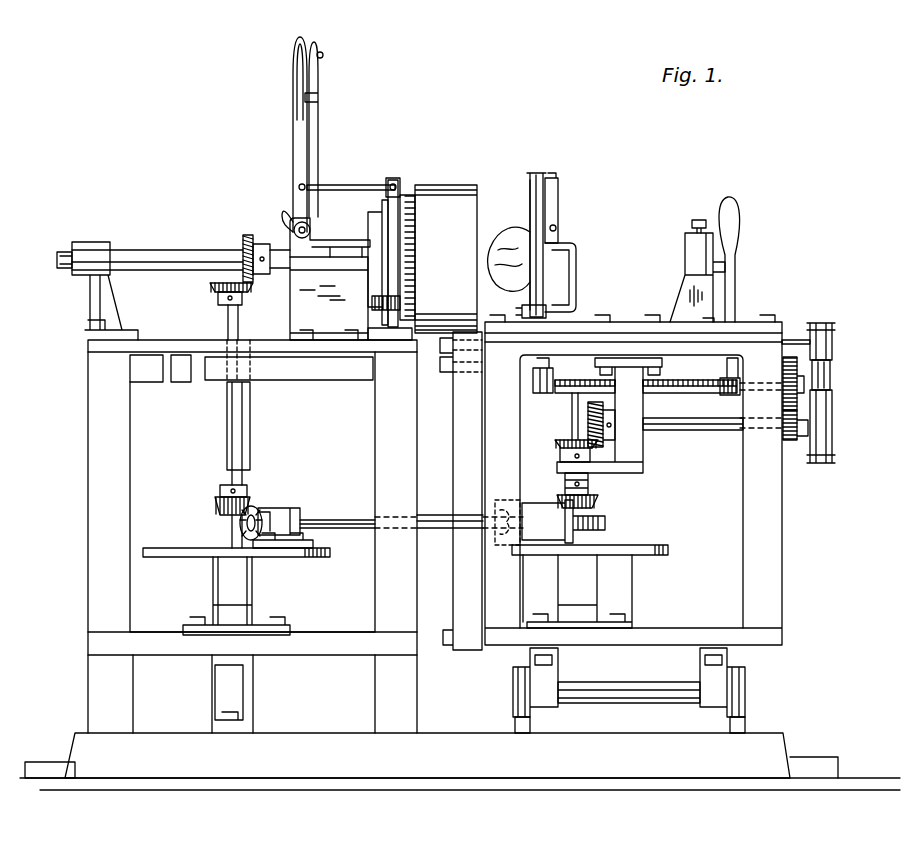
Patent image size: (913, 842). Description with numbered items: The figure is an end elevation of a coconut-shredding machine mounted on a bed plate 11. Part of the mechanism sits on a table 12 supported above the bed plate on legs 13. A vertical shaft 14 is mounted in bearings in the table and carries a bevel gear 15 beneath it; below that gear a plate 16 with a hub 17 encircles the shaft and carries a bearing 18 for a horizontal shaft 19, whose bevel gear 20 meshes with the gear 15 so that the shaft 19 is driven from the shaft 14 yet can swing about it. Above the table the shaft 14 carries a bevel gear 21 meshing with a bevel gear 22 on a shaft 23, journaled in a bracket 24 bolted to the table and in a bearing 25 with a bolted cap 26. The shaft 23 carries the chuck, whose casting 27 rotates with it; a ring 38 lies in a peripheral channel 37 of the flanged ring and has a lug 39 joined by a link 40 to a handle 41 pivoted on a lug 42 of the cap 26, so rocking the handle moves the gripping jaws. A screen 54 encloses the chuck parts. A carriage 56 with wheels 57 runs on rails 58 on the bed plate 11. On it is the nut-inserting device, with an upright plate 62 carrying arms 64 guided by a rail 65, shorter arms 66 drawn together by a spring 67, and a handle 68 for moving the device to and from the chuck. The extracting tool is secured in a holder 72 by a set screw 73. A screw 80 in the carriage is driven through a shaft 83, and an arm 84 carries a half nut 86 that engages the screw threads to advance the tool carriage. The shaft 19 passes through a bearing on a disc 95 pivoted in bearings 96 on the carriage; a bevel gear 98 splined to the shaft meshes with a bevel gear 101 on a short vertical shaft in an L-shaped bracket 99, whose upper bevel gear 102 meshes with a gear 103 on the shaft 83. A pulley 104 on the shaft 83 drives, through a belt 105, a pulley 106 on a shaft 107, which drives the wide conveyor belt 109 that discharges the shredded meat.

The bed plate 11 is at (765, 745).
The table 12 is at (156, 340).
The legs 13 is at (88, 512).
The vertical shaft 14 is at (230, 440).
The bevel gear 15 is at (221, 493).
The plate 16 is at (171, 560).
The hub 17 is at (215, 588).
The bearing 18 is at (285, 508).
The horizontal shaft 19 is at (334, 520).
The bevel gear 20 is at (262, 502).
The bevel gear 21 is at (212, 292).
The bevel gear 22 is at (246, 238).
The shaft 23 is at (175, 250).
The bracket 24 is at (95, 240).
The bearing 25 is at (296, 298).
The cap 26 is at (338, 240).
The casting 27 is at (375, 212).
The peripheral channel 37 is at (393, 178).
The ring 38 is at (399, 247).
The lug 39 is at (399, 185).
The link 40 is at (355, 185).
The handle 41 is at (296, 148).
The lug 42 is at (285, 221).
The screen 54 is at (464, 197).
The carriage 56 is at (782, 549).
The wheels 57 is at (513, 679).
The rails 58 is at (515, 725).
The upright plate 62 is at (538, 173).
The arms 64 is at (531, 207).
The rail 65 is at (522, 311).
The shorter arms 66 is at (558, 216).
The spring 67 is at (557, 229).
The handle 68 is at (576, 275).
The holder 72 is at (688, 248).
The set screw 73 is at (700, 220).
The screw 80 is at (681, 389).
The shaft 83 is at (697, 428).
The arm 84 is at (733, 292).
The half nut 86 is at (723, 392).
The disc 95 is at (670, 550).
The bearings 96 is at (600, 617).
The bevel gear 98 is at (580, 538).
The L-shaped bracket 99 is at (643, 458).
The bevel gear 101 is at (598, 500).
The bevel gear 102 is at (572, 440).
The bevel gear 103 is at (588, 410).
The pulley 104 is at (833, 431).
The belt 105 is at (826, 375).
The pulley 106 is at (832, 341).
The shaft 107 is at (795, 325).
The wide belt 109 is at (463, 456).